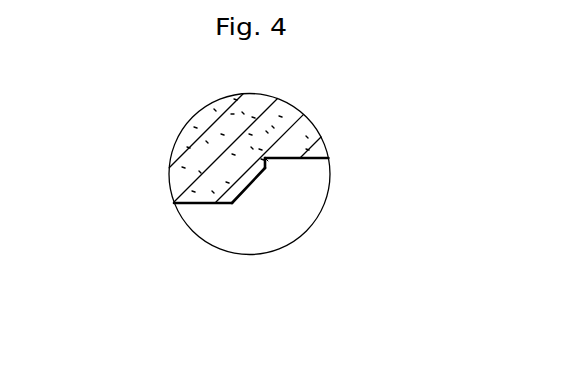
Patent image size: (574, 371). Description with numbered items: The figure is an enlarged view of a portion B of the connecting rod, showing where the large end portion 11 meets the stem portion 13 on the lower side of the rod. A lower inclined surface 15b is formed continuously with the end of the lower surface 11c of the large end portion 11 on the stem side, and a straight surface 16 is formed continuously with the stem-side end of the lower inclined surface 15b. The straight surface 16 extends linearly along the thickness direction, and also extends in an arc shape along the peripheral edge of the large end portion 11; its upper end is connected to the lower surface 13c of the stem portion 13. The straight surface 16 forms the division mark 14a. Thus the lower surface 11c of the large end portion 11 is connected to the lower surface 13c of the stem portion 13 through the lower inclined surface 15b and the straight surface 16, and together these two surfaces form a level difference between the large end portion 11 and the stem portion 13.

The portion B is at (186, 123).
The large end portion 11 is at (170, 172).
The lower surface of the large end portion 11c is at (194, 204).
The stem portion 13 is at (315, 127).
The lower surface of the stem portion 13c is at (308, 160).
The division mark 14a is at (277, 168).
The lower inclined surface 15b is at (247, 188).
The straight surface 16 is at (268, 161).